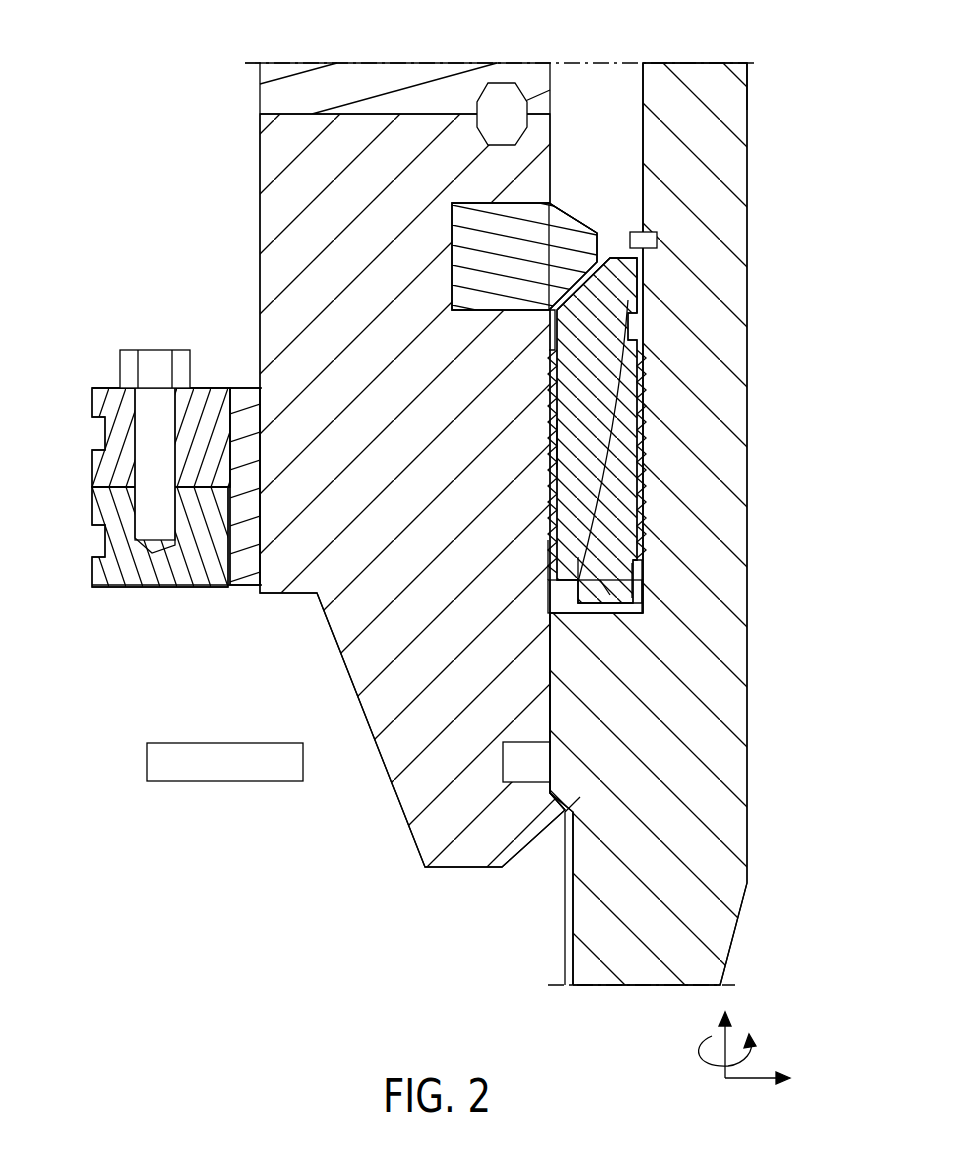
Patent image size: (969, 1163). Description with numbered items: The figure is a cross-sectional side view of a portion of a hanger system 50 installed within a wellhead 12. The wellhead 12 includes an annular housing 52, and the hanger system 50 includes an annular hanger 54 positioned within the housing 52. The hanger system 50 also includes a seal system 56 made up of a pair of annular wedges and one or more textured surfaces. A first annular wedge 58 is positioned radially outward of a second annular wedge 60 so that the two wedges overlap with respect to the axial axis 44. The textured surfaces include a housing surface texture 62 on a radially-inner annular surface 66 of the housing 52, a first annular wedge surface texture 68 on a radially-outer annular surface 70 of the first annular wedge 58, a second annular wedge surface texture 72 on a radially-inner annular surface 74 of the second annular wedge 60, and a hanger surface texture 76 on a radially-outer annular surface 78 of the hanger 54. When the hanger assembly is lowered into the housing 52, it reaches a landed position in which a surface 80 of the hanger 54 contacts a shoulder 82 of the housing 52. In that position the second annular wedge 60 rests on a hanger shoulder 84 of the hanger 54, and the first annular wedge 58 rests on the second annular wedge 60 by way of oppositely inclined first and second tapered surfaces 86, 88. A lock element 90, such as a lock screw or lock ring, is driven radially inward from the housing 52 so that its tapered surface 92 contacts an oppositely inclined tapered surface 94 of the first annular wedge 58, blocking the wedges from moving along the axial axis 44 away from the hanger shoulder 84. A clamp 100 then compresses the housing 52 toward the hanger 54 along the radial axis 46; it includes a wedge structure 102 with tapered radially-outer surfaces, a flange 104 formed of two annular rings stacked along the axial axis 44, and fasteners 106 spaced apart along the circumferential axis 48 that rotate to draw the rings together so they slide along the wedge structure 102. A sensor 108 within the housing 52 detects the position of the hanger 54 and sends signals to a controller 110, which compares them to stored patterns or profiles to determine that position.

The wellhead 12 is at (196, 44).
The axial axis 44 is at (724, 1040).
The radial axis 46 is at (748, 1080).
The circumferential axis 48 is at (708, 1062).
The hanger system 50 is at (778, 215).
The housing 52 is at (268, 209).
The hanger 54 is at (710, 567).
The seal system 56 is at (670, 334).
The first annular wedge 58 is at (553, 326).
The second annular wedge 60 is at (634, 606).
The housing surface texture 62 is at (552, 538).
The radially-inner annular surface 66 is at (550, 598).
The first annular wedge surface texture 68 is at (642, 408).
The radially-outer annular surface 70 is at (550, 318).
The second annular wedge surface texture 72 is at (556, 498).
The radially-inner annular surface 74 is at (613, 578).
The hanger surface texture 76 is at (632, 518).
The radially-outer annular surface 78 is at (635, 456).
The surface 80 is at (556, 806).
The shoulder 82 is at (548, 812).
The hanger shoulder 84 is at (600, 615).
The first tapered surface 86 is at (580, 415).
The second tapered surface 88 is at (616, 386).
The lock element 90 is at (480, 244).
The tapered surface 92 is at (586, 268).
The tapered surface 94 is at (598, 295).
The clamp 100 is at (88, 352).
The wedge structure 102 is at (245, 572).
The flange 104 is at (100, 458).
The fastener 106 is at (148, 540).
The sensor 108 is at (526, 742).
The controller 110 is at (229, 743).